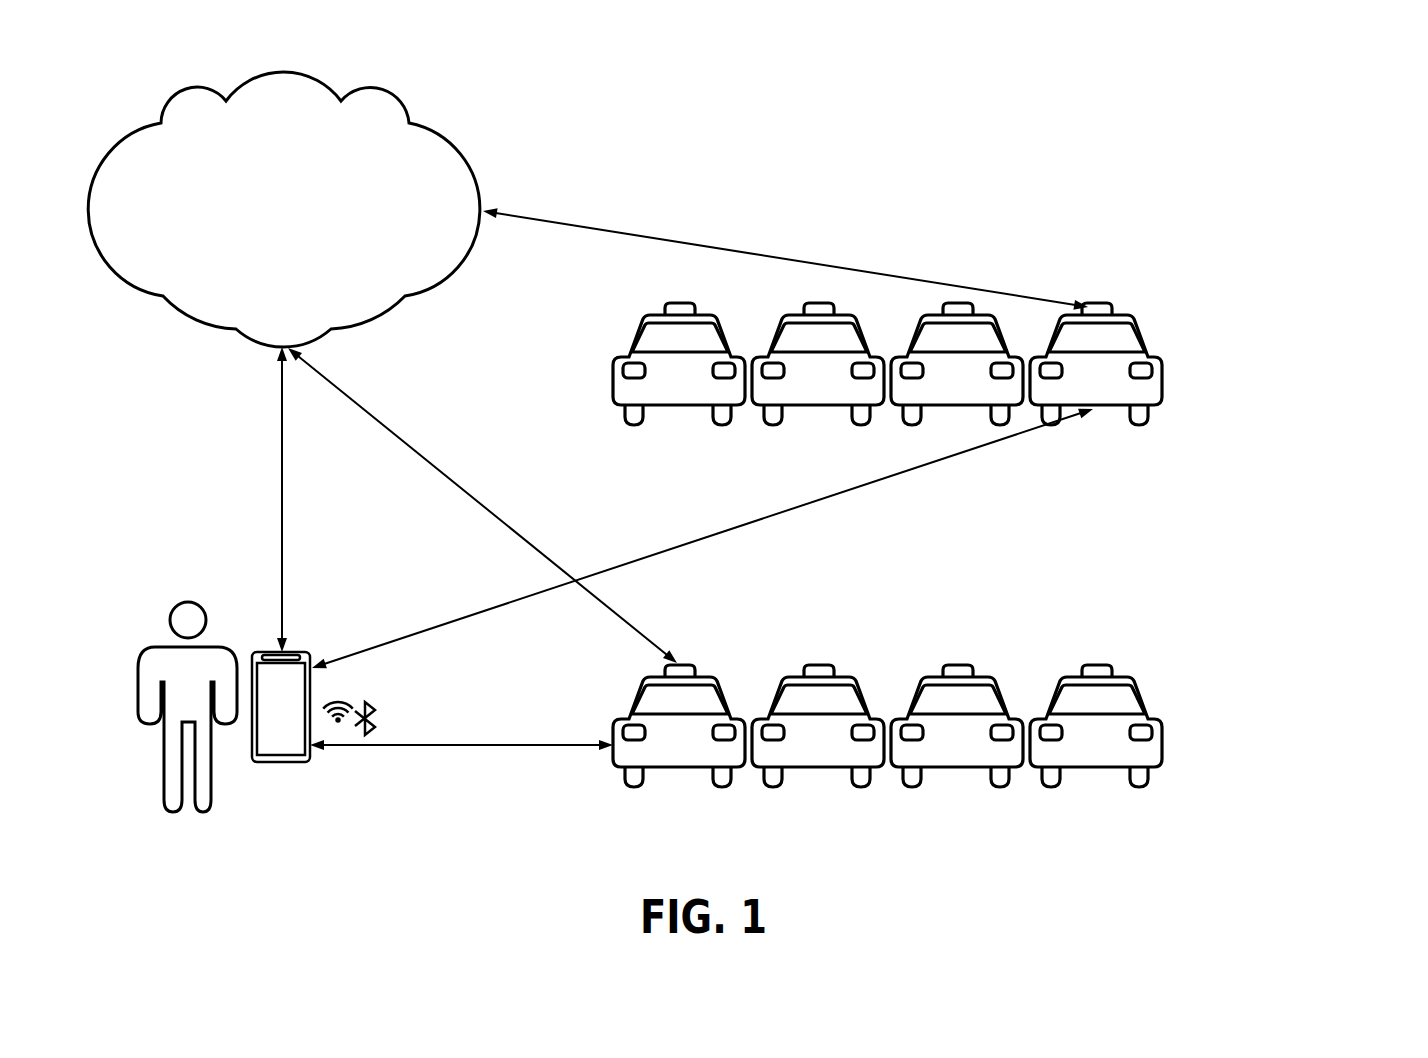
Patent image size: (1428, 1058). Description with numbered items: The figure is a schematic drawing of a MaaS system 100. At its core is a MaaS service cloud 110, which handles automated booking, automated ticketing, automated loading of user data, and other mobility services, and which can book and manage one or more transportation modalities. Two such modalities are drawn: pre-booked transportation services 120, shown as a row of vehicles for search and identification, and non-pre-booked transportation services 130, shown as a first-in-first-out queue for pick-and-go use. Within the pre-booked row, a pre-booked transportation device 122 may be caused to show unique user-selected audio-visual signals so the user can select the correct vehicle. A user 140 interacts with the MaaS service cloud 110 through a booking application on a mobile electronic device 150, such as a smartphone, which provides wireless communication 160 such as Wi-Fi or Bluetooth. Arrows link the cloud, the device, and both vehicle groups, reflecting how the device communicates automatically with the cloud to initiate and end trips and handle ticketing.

The MaaS system 100 is at (1352, 45).
The MaaS service cloud 110 is at (205, 92).
The pre-booked transportation services 120 is at (849, 385).
The pre-booked transportation device 122 is at (1121, 317).
The non-pre-booked transportation services 130 is at (613, 694).
The user 140 is at (163, 652).
The mobile electronic device 150 is at (298, 652).
The wireless communication 160 is at (360, 695).